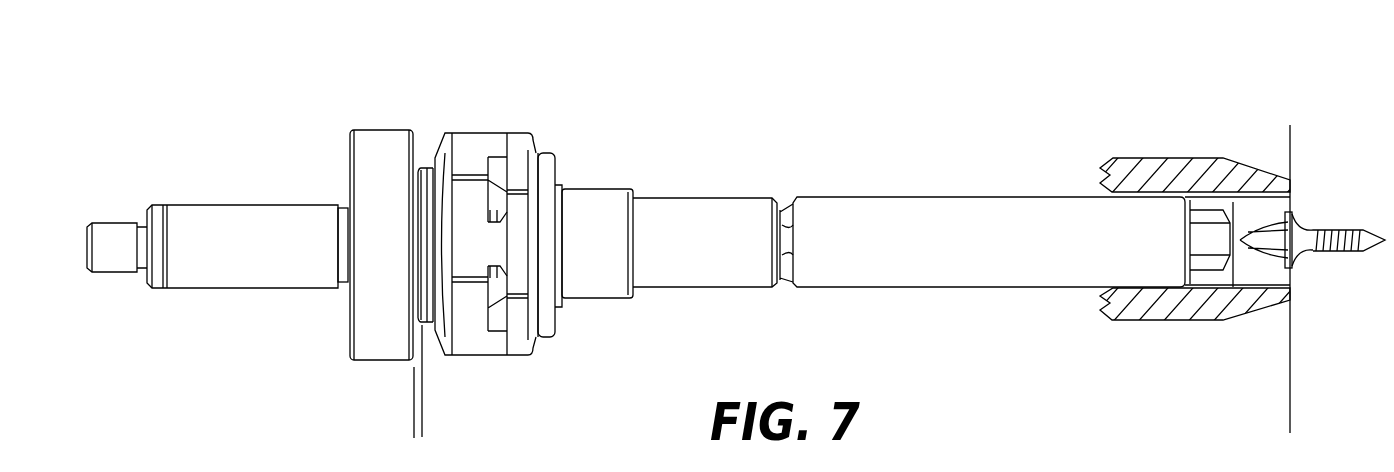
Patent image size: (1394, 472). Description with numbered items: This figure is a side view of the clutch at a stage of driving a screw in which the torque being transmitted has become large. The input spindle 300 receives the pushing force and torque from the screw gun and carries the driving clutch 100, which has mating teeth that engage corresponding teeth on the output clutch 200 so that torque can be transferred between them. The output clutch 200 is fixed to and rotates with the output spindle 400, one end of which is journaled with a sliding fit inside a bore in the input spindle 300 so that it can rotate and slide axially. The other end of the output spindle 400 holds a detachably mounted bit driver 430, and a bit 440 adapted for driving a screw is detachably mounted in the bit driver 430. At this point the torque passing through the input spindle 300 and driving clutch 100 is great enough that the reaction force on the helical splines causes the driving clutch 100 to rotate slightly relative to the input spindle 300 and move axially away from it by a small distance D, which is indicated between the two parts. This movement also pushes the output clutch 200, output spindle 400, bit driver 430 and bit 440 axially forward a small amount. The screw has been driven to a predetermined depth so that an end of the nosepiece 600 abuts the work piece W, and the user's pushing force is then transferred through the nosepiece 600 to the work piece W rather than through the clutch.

The driving clutch 100 is at (455, 132).
The output clutch 200 is at (517, 132).
The input spindle 300 is at (240, 288).
The output spindle 400 is at (600, 298).
The bit driver 430 is at (997, 287).
The bit 440 is at (1213, 270).
The nosepiece 600 is at (1162, 158).
The work piece W is at (1290, 400).
The small distance D is at (362, 398).